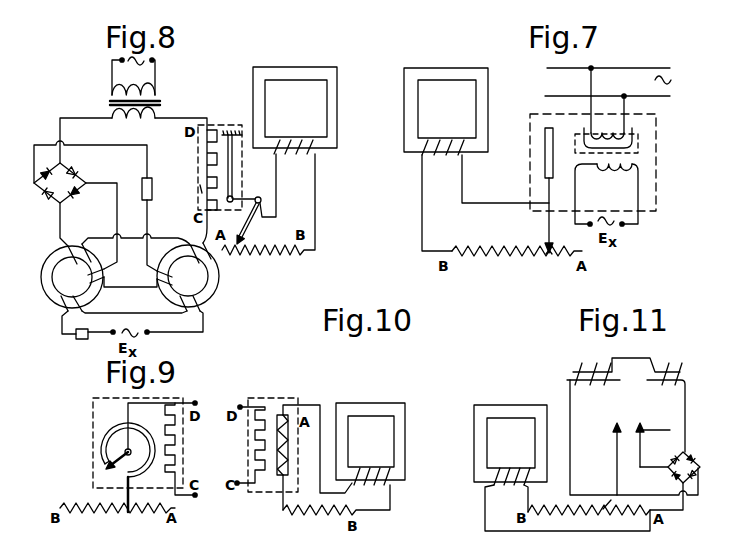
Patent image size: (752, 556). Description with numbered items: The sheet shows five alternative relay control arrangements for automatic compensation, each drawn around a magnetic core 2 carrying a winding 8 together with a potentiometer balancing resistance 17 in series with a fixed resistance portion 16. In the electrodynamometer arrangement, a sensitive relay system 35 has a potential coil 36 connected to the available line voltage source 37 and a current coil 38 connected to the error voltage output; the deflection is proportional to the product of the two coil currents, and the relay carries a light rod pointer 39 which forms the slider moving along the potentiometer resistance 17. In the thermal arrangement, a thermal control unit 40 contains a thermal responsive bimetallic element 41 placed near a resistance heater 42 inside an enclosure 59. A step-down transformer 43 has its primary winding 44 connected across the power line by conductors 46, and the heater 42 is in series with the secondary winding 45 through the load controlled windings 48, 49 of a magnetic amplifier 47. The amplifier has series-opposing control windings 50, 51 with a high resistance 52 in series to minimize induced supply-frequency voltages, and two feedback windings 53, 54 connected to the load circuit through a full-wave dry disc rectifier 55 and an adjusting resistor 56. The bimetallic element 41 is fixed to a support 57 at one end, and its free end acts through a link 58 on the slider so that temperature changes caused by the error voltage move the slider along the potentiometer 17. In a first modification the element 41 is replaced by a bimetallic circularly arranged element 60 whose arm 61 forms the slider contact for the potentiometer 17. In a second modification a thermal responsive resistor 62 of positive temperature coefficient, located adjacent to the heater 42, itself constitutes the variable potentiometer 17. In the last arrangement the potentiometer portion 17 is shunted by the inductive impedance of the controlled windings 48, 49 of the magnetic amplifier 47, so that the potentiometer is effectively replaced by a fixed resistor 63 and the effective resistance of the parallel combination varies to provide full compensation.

In FIG. 8, the transformer core 2 is at (299, 59).
In FIG. 7, the transformer core 2 is at (449, 60).
In FIG. 8, the winding 8 is at (293, 137).
In FIG. 7, the winding 8 is at (443, 137).
In FIG. 10, the winding 8 is at (372, 468).
In FIG. 11, the winding 8 is at (512, 467).
In FIG. 7, the fixed resistance portion 16 is at (505, 255).
In FIG. 10, the fixed resistance portion 16 is at (336, 504).
In FIG. 7, the potentiometer balancing resistance 17 is at (554, 262).
In FIG. 11, the potentiometer balancing resistance 17 is at (631, 508).
In FIG. 7, the relay system of the electrodynamometer type 35 is at (657, 186).
In FIG. 7, the potential coil 36 is at (614, 132).
In FIG. 7, the line voltage source 37 is at (608, 82).
In FIG. 7, the current coil 38 is at (621, 170).
In FIG. 7, the rod pointer 39 is at (536, 190).
In FIG. 8, the thermal control unit 40 is at (196, 163).
In FIG. 8, the thermal responsive bimetallic element 41 is at (234, 172).
In FIG. 8, the resistance heater 42 is at (214, 128).
In FIG. 9, the resistance heater 42 is at (166, 438).
In FIG. 8, the transformer 43 is at (182, 104).
In FIG. 8, the primary winding 44 is at (121, 92).
In FIG. 8, the secondary winding 45 is at (140, 118).
In FIG. 8, the conductors 46 is at (112, 81).
In FIG. 8, the magnetic amplifier 47 is at (58, 119).
In FIG. 11, the magnetic amplifier 47 is at (633, 407).
In FIG. 8, the load controlled winding 48 is at (70, 245).
In FIG. 11, the load controlled winding 48 is at (587, 384).
In FIG. 8, the load controlled winding 49 is at (199, 245).
In FIG. 11, the load controlled winding 49 is at (667, 384).
In FIG. 8, the control winding 50 is at (72, 277).
In FIG. 8, the control winding 51 is at (188, 276).
In FIG. 8, the high resistance 52 is at (76, 340).
In FIG. 8, the feedback winding 53 is at (96, 265).
In FIG. 8, the feedback winding 54 is at (157, 267).
In FIG. 8, the full-wave dry disc rectifier 55 is at (74, 176).
In FIG. 8, the adjusting resistor 56 is at (136, 186).
In FIG. 8, the support 57 is at (235, 130).
In FIG. 8, the link 58 is at (258, 197).
In FIG. 8, the enclosure 59 is at (200, 186).
In FIG. 9, the bimetallic circularly arranged element 60 is at (122, 432).
In FIG. 9, the arm 61 is at (128, 513).
In FIG. 10, the thermal responsive resistor 62 is at (283, 414).
In FIG. 11, the fixed resistor 63 is at (615, 466).